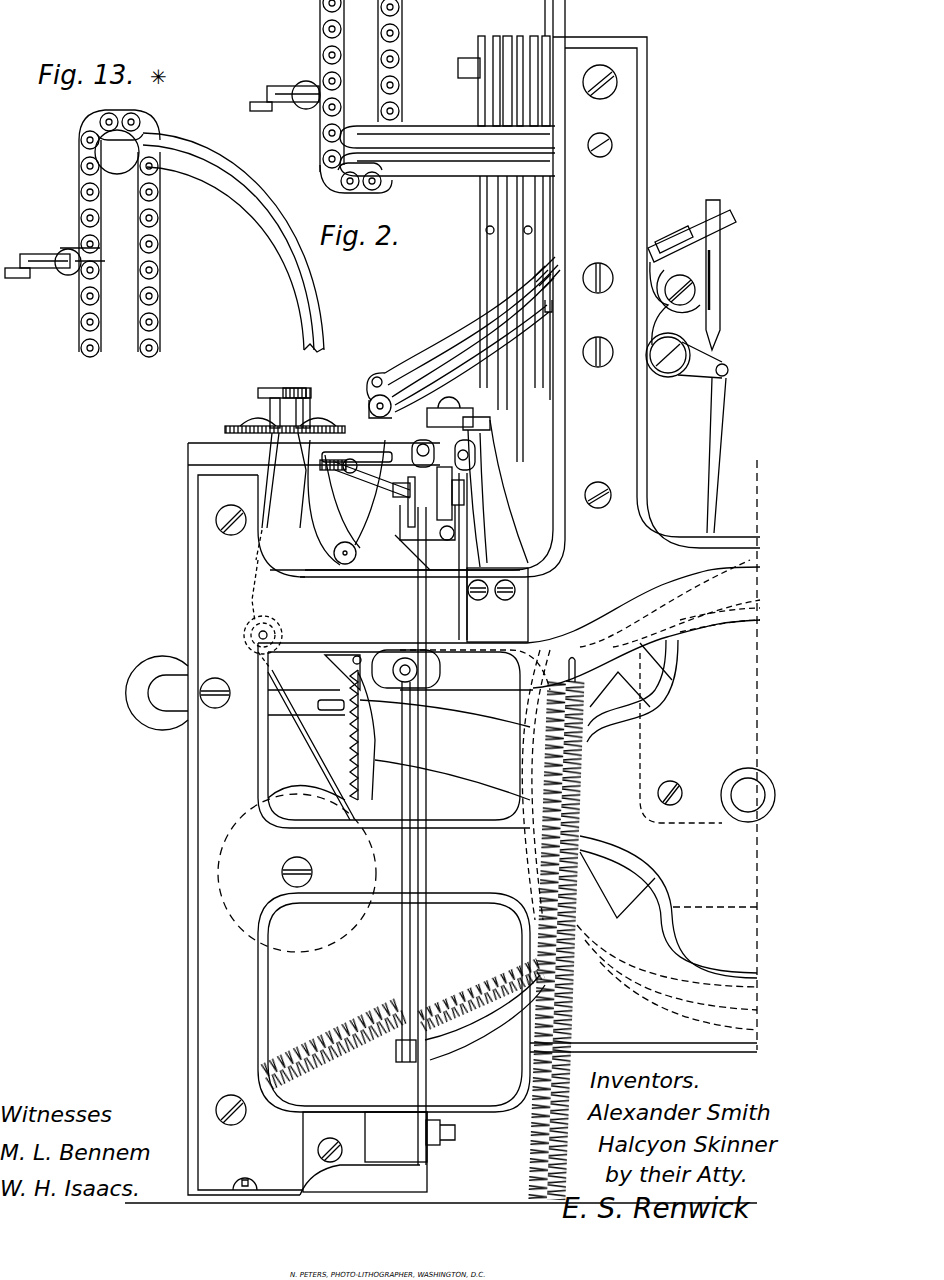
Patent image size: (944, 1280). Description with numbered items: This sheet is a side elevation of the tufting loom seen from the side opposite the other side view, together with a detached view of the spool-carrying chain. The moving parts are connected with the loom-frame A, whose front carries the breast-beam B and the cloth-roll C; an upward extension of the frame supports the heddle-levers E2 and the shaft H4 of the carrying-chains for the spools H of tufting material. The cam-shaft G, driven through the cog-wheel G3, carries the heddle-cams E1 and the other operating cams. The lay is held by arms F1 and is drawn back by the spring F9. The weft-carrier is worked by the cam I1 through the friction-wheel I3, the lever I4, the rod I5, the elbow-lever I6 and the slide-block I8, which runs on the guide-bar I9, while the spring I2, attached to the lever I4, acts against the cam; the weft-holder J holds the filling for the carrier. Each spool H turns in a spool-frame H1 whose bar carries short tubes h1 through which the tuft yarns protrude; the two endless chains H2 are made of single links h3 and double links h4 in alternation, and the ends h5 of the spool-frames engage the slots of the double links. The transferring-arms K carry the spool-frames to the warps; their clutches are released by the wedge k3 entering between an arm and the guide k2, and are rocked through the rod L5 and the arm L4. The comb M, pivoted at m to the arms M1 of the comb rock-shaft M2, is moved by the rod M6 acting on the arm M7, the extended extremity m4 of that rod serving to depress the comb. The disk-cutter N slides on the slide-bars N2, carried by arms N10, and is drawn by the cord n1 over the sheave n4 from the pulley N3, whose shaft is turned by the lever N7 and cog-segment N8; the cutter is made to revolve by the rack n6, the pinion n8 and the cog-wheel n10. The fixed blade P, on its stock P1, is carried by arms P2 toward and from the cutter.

In FIG. 13, the endless carrying-chains H2 is at (62, 197).
The endless carrying-chains H2 is at (340, 32).
In FIG. 13, the spool-frame H1 is at (28, 262).
The spool-frame H1 is at (280, 94).
In FIG. 13, the spools of tufting material H is at (62, 254).
The spools of tufting material H is at (305, 84).
The single links h3 is at (403, 17).
The double links h4 is at (389, 51).
The short tubes or nozzles h1 is at (242, 106).
The ends of the spool-frames h5 is at (290, 108).
The shaft of the carrying-chains H4 is at (334, 160).
The heddle-levers E2 is at (540, 36).
The heddle-cams E1 is at (530, 288).
The transferring-arms K is at (470, 320).
The guide k2 is at (730, 225).
The wedge k3 is at (725, 238).
The arm of the clutch rock-shaft L4 is at (736, 370).
The rod L5 is at (730, 395).
The breast-beam B is at (180, 455).
The cloth-roll C is at (157, 693).
The loom-frame A is at (374, 881).
The cog-rack n6 is at (282, 380).
The pinion n8 is at (297, 380).
The slide-bars N2 is at (258, 404).
The cog-wheel n10 is at (285, 422).
The disk-cutter N is at (330, 424).
The pulley-sheave n4 is at (283, 480).
The cord n1 is at (294, 480).
The arms N10 is at (262, 525).
The arms of the comb rock-shaft M1 is at (322, 508).
The comb rock-shaft M2 is at (340, 566).
The pivots m is at (365, 468).
The reciprocating comb M is at (383, 452).
The fixed blade P is at (432, 414).
The stock of the fixed blade P1 is at (450, 419).
The weft-holder J is at (462, 449).
The arms P2 is at (484, 500).
The friction-wheel I3 is at (418, 466).
The slide-block I8 is at (448, 556).
The guide-bar I9 is at (454, 492).
The cam I1 is at (400, 512).
The arms F1 is at (430, 552).
The rod I5 is at (398, 945).
The elbow-lever I6 is at (436, 836).
The arm M7 is at (336, 672).
The extended extremity of the rod m4 is at (306, 702).
The cog-segment N8 is at (346, 735).
The pulley N3 is at (311, 745).
The lever N7 is at (452, 780).
The rod M6 is at (446, 711).
The lever I4 is at (580, 740).
The cam-shaft G is at (748, 795).
The spring I2 is at (562, 898).
The cog-wheel G3 is at (666, 918).
The spring F9 is at (356, 1022).